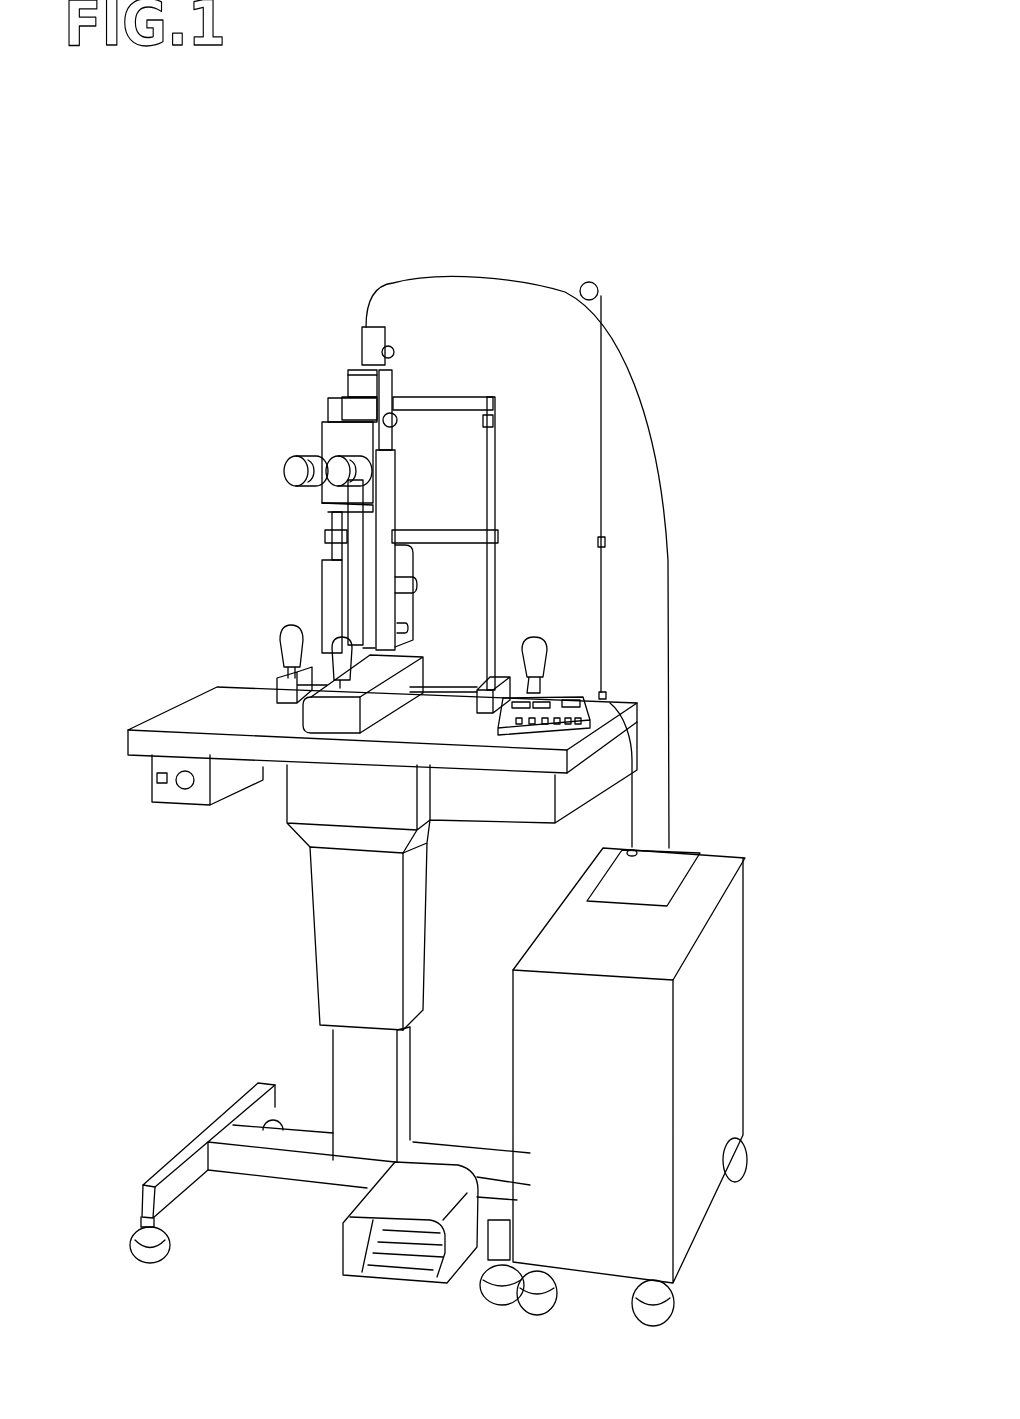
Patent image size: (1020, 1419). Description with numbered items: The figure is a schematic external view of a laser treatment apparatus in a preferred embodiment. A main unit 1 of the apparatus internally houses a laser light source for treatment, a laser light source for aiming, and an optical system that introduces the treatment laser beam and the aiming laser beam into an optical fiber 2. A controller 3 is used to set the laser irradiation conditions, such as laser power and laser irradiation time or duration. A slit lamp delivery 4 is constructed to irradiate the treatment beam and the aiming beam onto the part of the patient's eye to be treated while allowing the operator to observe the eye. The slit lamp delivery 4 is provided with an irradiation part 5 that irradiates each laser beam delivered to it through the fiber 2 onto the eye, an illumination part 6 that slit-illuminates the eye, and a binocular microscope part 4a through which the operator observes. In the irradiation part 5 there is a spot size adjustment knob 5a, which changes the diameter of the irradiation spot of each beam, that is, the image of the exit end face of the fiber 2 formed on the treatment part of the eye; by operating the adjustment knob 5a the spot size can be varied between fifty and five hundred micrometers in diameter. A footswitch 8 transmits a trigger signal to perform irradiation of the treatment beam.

The main unit 1 is at (722, 942).
The optical fiber 2 is at (666, 540).
The controller 3 is at (587, 700).
The slit lamp delivery 4 is at (243, 522).
The binocular microscope part 4a is at (348, 445).
The irradiation part 5 is at (372, 350).
The spot size adjustment knob 5a is at (392, 413).
The illumination part 6 is at (405, 567).
The footswitch 8 is at (413, 1253).